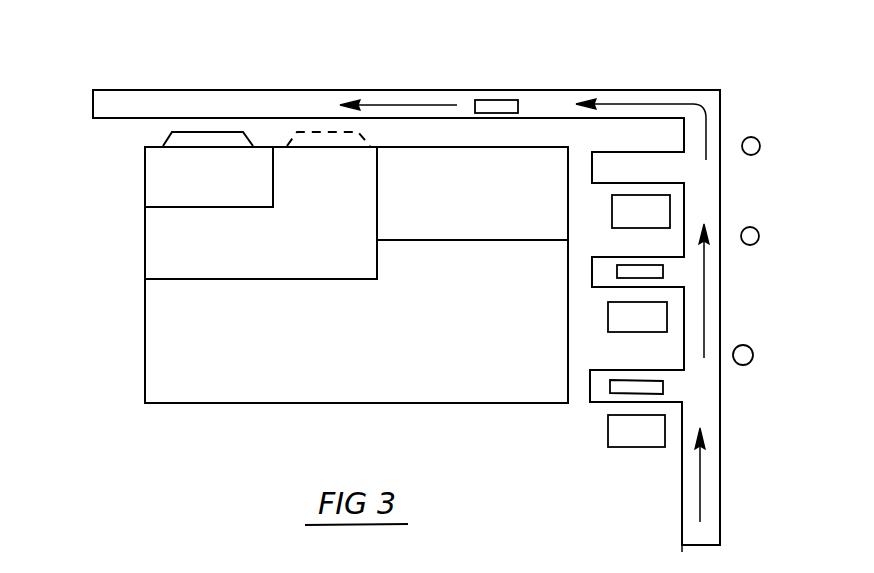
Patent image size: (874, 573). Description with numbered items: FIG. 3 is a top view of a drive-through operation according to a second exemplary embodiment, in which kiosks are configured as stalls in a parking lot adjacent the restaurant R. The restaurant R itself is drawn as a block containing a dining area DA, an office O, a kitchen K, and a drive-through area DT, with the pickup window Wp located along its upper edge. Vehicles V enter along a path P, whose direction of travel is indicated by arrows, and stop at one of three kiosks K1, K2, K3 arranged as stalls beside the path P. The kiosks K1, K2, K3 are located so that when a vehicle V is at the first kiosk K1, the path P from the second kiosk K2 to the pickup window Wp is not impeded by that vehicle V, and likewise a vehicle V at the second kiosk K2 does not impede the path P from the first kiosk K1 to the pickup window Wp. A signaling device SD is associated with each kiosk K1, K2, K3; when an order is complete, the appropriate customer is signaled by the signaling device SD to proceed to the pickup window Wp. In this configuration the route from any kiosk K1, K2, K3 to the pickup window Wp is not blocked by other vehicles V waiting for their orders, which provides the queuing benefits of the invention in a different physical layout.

The path P is at (710, 290).
The restaurant R is at (145, 333).
The drive-through area DT is at (209, 177).
The kitchen K is at (261, 213).
The office O is at (472, 219).
The dining area DA is at (356, 364).
The pickup window Wp is at (187, 128).
The vehicle V is at (503, 100).
The kiosk K3 is at (670, 210).
The second kiosk K2 is at (667, 320).
The first kiosk K1 is at (665, 428).
The signaling device SD is at (757, 137).